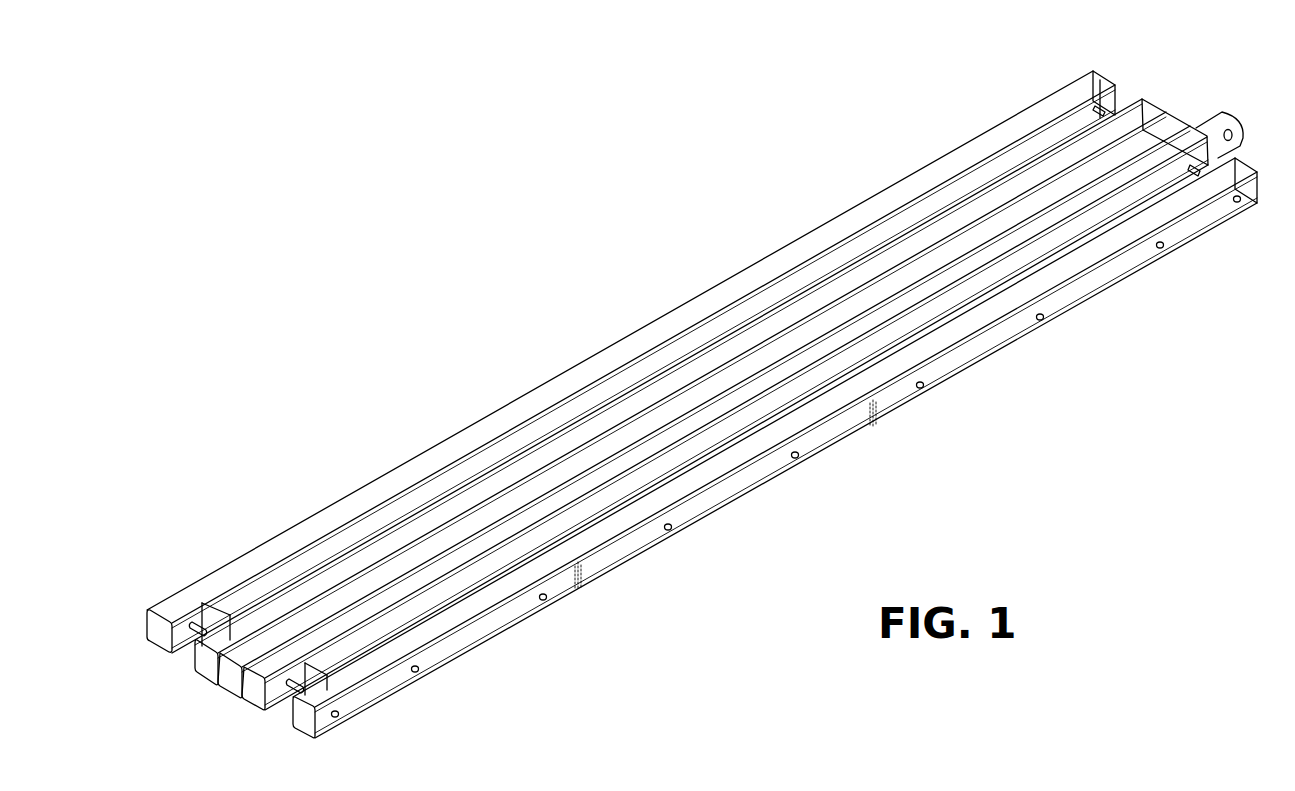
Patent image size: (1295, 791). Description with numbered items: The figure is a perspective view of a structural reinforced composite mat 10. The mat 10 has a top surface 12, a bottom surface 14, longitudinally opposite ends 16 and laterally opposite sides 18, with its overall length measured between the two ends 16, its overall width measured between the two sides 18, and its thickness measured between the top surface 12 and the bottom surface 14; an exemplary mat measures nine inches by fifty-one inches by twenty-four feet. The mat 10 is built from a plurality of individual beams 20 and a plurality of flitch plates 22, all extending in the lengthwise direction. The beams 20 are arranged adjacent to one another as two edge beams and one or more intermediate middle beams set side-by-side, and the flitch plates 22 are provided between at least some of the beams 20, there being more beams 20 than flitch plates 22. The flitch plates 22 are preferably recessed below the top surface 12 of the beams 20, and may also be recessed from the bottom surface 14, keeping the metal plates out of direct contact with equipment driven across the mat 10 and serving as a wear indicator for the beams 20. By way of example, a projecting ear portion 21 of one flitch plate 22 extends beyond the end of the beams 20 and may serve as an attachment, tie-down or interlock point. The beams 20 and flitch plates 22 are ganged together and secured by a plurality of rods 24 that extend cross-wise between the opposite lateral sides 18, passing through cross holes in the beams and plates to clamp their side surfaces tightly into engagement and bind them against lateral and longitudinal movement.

The structural reinforced composite mat 10 is at (535, 185).
The top surface 12 is at (762, 272).
The bottom surface 14 is at (830, 443).
The longitudinally opposite ends 16 is at (148, 628).
The laterally opposite sides 18 is at (522, 393).
The beams 20 is at (1027, 178).
The projecting ear portion 21 is at (1225, 113).
The flitch plates 22 is at (905, 245).
The rods 24 is at (193, 626).